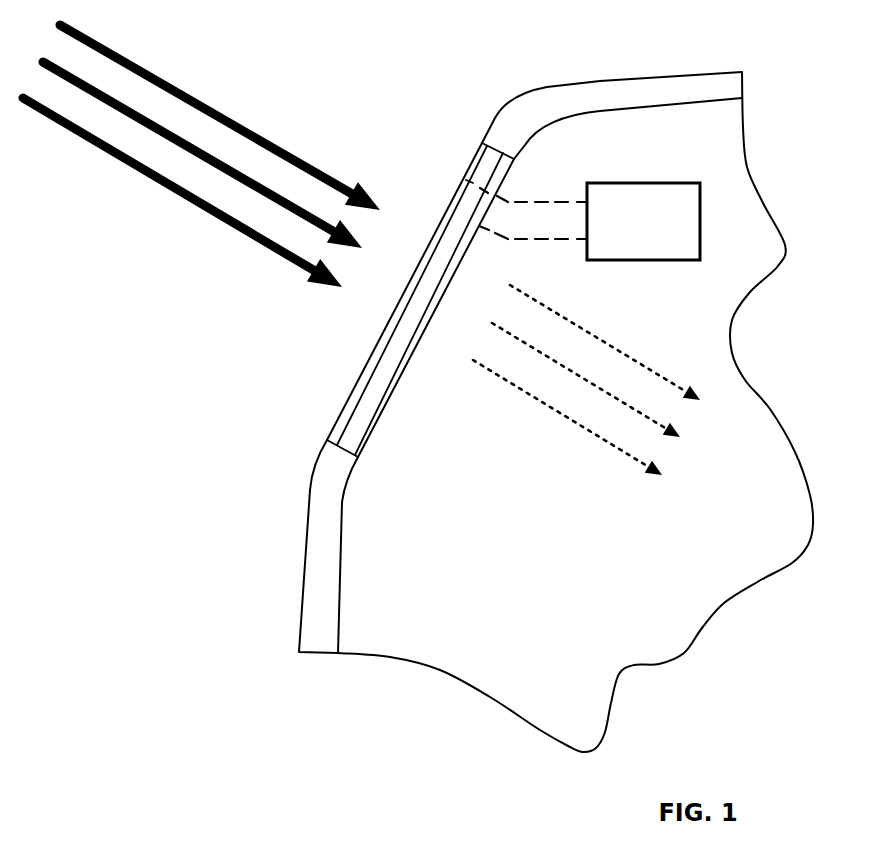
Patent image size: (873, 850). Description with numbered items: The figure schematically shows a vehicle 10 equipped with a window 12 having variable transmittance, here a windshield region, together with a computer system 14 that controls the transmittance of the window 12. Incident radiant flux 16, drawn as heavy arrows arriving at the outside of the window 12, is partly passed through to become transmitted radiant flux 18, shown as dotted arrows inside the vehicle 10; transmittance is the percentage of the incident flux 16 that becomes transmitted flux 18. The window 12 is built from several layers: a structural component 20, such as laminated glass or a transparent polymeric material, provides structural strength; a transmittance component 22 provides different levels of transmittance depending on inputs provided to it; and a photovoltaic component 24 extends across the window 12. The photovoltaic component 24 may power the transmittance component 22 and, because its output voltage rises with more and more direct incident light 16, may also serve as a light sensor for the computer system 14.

The vehicle 10 is at (585, 79).
The window 12 is at (350, 382).
The computer system 14 is at (630, 234).
The incident radiant flux 16 is at (213, 82).
The transmitted radiant flux 18 is at (567, 440).
The structural component 20 is at (368, 398).
The transmittance component 22 is at (368, 442).
The photovoltaic component 24 is at (337, 428).